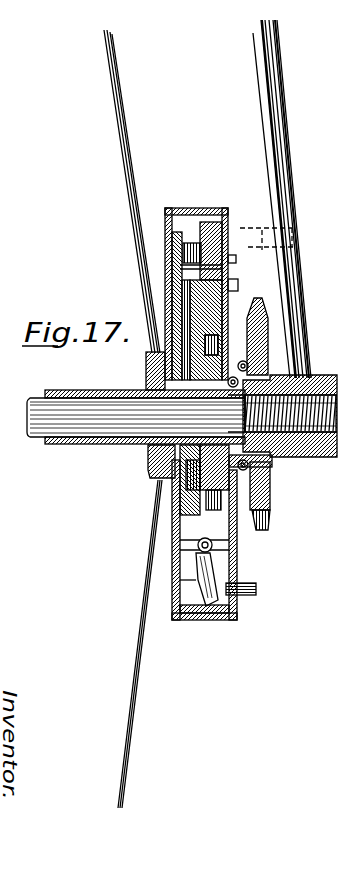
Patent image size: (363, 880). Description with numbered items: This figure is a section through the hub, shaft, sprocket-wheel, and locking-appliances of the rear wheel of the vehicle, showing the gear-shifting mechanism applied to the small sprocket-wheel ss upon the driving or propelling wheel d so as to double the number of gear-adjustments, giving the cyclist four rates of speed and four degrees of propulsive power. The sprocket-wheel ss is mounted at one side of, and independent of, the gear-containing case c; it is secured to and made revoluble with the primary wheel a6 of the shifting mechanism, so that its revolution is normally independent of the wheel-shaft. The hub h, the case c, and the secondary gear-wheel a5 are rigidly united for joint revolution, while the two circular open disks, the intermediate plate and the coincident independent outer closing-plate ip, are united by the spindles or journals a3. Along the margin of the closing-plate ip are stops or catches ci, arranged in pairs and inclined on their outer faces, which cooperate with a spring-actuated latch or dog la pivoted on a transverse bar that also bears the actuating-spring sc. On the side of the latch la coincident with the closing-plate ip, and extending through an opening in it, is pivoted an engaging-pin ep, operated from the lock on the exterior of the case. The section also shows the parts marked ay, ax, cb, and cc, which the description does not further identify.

The gear-containing case c is at (166, 240).
The rod ay is at (166, 302).
The driving or propelling wheel d is at (150, 362).
The hub h is at (106, 443).
The member ax is at (228, 234).
The spindles or journals a3 is at (228, 260).
The sprocket-wheel ss is at (267, 330).
The threaded block cb is at (270, 463).
The primary wheel a6 is at (258, 482).
The stops or catches ci is at (172, 518).
The secondary gear-wheel a5 is at (210, 512).
The lower housing cc is at (176, 548).
The independent closing-plate ip is at (215, 545).
The spring-actuated latch or dog la is at (216, 572).
The actuating-spring sc is at (180, 581).
The engaging-pin ep is at (257, 590).